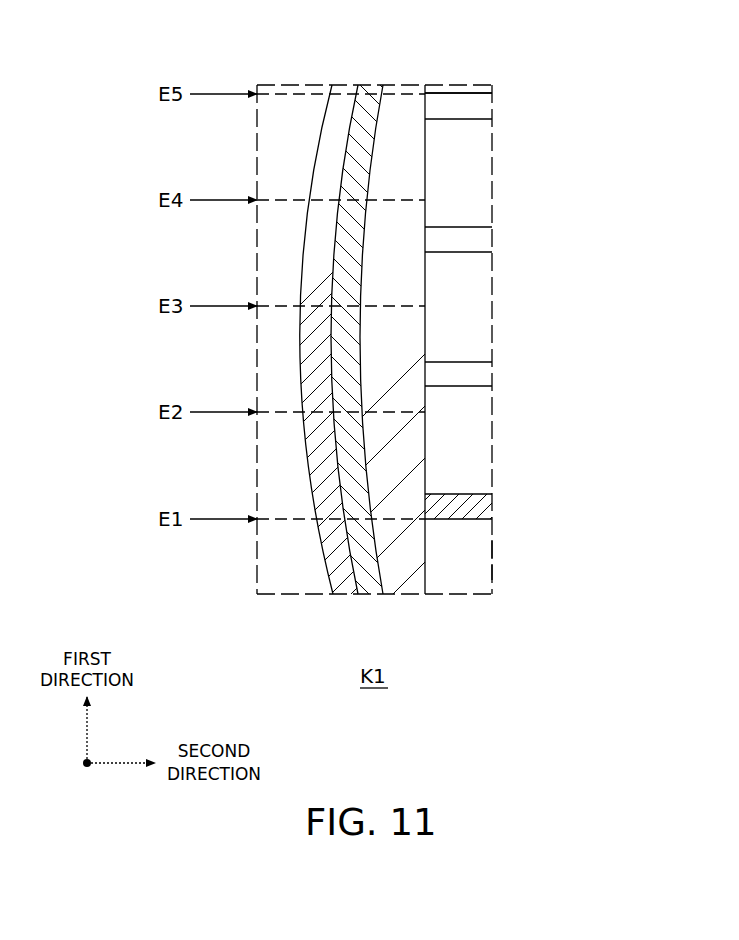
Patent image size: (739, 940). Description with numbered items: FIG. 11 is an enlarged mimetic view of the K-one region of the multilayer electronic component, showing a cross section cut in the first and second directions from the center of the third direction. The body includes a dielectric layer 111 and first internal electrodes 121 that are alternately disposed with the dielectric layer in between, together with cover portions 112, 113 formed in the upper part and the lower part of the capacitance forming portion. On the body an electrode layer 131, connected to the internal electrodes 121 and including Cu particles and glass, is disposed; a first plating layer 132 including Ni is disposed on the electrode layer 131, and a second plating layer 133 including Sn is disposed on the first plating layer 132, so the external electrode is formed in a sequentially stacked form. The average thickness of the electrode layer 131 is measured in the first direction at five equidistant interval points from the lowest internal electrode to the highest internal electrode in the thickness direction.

The dielectric layer 111 is at (485, 136).
The cover portion 112 is at (485, 91).
The cover portion 113 is at (485, 560).
The first internal electrode 121 is at (485, 106).
The electrode layer 131 is at (402, 110).
The first plating layer 132 is at (368, 108).
The second plating layer 133 is at (347, 108).